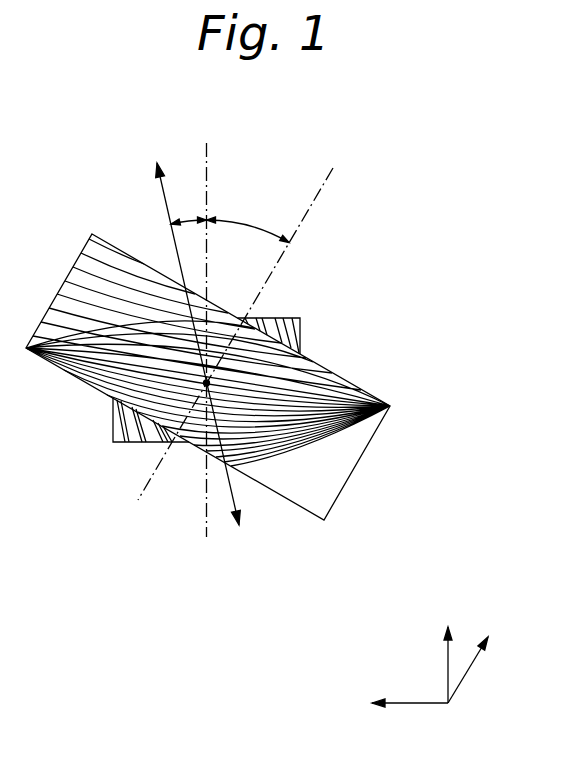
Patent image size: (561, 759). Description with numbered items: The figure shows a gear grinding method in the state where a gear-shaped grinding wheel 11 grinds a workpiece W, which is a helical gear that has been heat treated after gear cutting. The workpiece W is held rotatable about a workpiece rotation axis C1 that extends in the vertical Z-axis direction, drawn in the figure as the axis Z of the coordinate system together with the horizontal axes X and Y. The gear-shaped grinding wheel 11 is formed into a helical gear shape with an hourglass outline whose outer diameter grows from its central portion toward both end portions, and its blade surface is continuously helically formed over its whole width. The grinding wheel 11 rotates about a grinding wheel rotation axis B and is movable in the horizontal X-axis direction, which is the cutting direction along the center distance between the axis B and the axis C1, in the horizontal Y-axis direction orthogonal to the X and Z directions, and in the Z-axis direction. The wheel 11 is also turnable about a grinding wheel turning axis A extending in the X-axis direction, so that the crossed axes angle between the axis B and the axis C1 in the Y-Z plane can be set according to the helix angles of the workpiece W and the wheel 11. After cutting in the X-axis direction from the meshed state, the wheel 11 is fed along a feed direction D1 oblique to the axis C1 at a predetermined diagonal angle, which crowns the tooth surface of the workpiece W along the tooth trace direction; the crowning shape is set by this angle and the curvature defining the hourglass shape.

The gear-shaped grinding wheel 11 is at (362, 457).
The workpiece W is at (300, 325).
The grinding wheel turning axis A is at (206, 383).
The grinding wheel rotation axis B is at (242, 321).
The workpiece rotation axis C1 is at (204, 326).
The feed direction D1 is at (188, 330).
The X-axis direction X is at (473, 654).
The Y-axis direction Y is at (397, 705).
The Z-axis direction Z is at (448, 649).